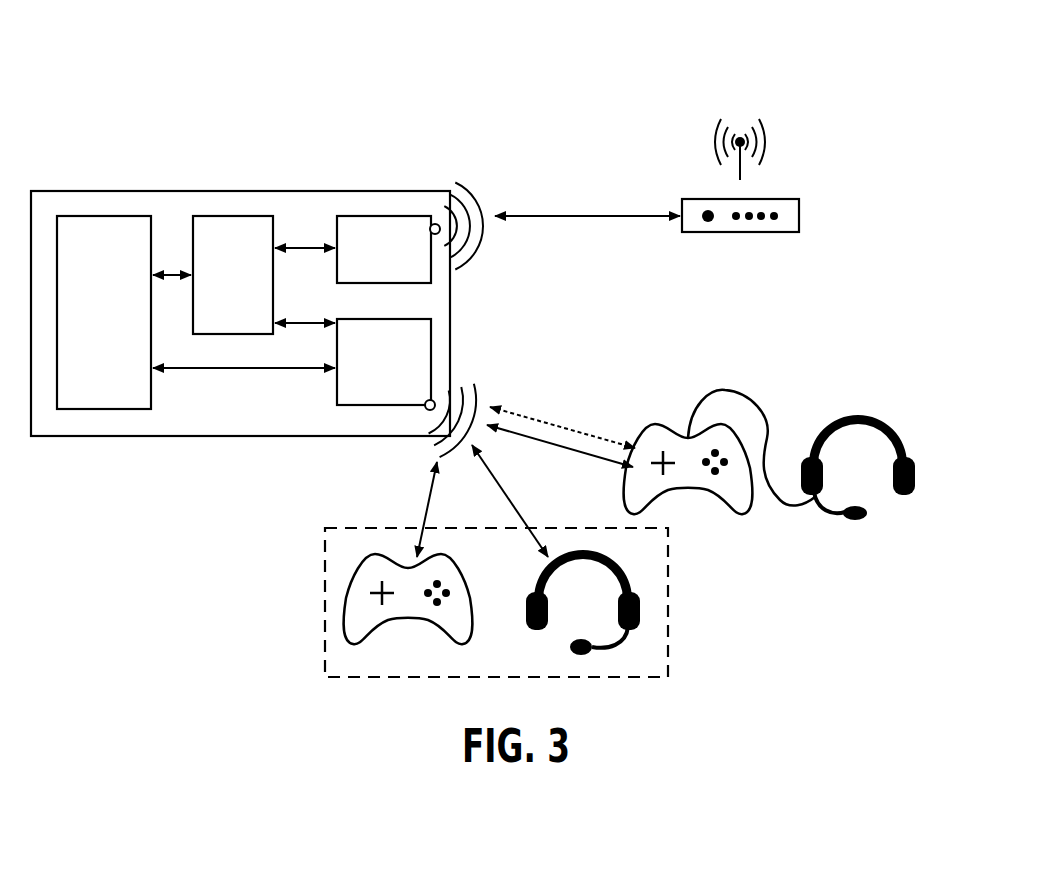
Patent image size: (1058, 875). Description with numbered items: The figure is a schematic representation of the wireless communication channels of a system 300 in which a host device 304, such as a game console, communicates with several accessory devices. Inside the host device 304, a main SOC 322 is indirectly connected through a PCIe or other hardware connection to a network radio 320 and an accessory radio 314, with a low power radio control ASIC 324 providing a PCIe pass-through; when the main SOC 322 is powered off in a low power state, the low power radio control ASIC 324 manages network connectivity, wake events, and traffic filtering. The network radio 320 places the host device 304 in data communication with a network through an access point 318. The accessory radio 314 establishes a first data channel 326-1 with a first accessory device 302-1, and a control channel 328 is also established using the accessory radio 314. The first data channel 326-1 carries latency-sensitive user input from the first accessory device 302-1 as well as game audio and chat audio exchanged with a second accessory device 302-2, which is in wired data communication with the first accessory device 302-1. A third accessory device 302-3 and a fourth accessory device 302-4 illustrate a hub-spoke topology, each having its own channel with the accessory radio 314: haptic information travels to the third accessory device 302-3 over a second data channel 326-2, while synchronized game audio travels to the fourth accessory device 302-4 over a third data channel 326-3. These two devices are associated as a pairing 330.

The system 300 is at (692, 51).
The host device 304 is at (155, 191).
The main SOC 322 is at (86, 322).
The low power radio control ASIC 324 is at (215, 286).
The network radio 320 is at (369, 264).
The accessory radio 314 is at (369, 376).
The access point 318 is at (805, 216).
The control channel 328 is at (538, 420).
The first data channel 326-1 is at (591, 455).
The second data channel 326-2 is at (428, 502).
The third data channel 326-3 is at (515, 502).
The first accessory device 302-1 is at (652, 427).
The second accessory device 302-2 is at (842, 417).
The third accessory device 302-3 is at (347, 595).
The fourth accessory device 302-4 is at (642, 598).
The pairing 330 is at (668, 638).